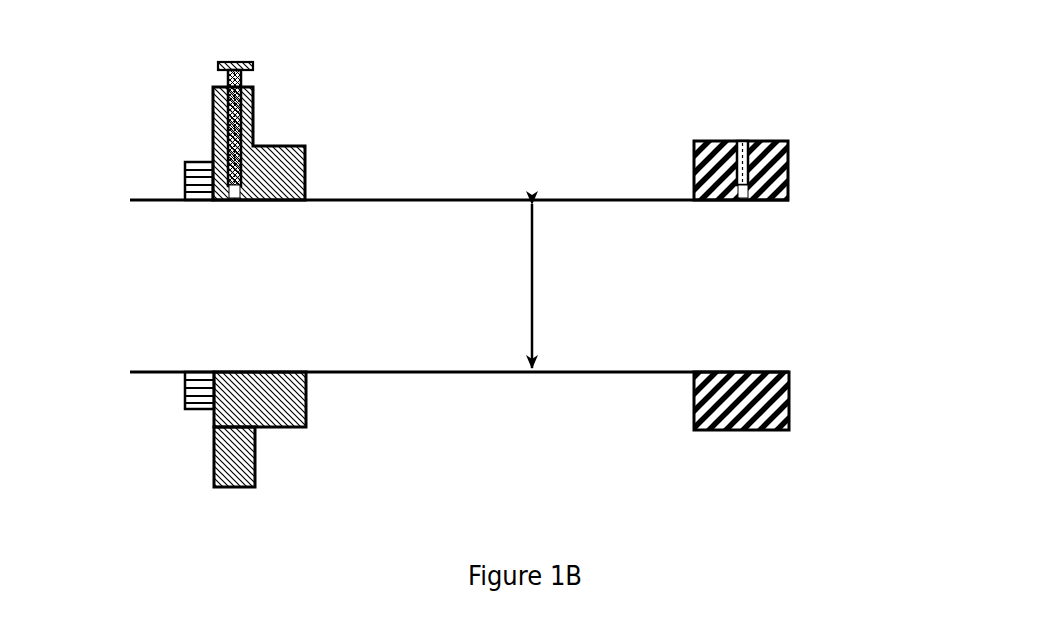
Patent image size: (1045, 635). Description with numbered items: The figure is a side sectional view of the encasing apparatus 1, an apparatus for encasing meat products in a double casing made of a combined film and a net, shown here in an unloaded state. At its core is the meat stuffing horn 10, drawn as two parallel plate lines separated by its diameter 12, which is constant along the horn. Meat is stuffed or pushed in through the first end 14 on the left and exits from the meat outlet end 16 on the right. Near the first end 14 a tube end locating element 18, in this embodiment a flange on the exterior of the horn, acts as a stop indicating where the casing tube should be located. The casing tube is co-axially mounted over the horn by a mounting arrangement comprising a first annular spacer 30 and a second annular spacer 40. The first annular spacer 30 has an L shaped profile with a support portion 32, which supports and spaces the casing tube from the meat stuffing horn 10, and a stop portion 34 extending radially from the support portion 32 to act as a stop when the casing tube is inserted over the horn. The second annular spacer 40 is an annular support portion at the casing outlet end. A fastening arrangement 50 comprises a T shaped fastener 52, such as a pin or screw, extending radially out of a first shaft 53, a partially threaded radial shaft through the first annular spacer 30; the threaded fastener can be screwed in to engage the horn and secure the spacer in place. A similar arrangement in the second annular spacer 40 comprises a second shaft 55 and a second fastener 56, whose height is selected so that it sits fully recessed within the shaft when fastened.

The encasing apparatus 1 is at (128, 60).
The meat stuffing horn 10 is at (418, 195).
The diameter 12 is at (549, 286).
The first end 14 is at (128, 288).
The meat outlet end 16 is at (798, 285).
The tube end locating element 18 is at (183, 172).
The first annular spacer 30 is at (208, 118).
The support portion 32 is at (312, 393).
The stop portion 34 is at (257, 475).
The second annular spacer 40 is at (770, 129).
The fastening arrangement 50 is at (262, 105).
The T shaped fastener 52 is at (258, 66).
The first shaft 53 is at (254, 100).
The second shaft 55 is at (732, 193).
The second fastener 56 is at (742, 140).